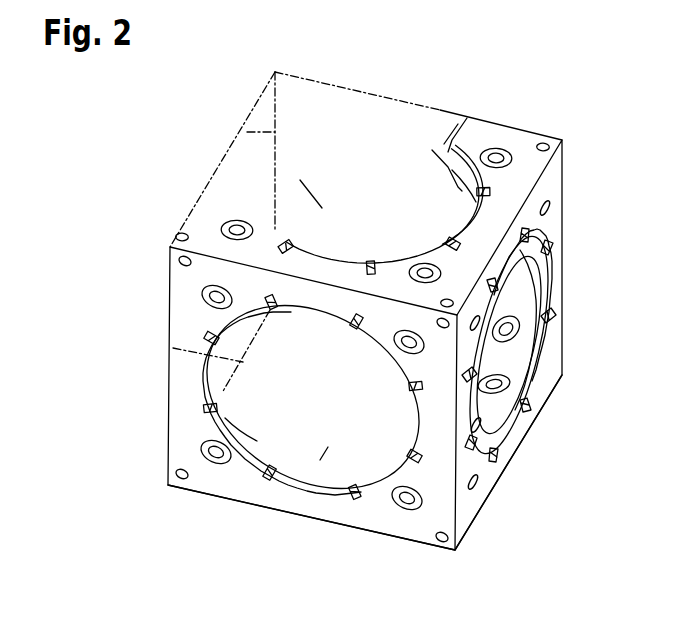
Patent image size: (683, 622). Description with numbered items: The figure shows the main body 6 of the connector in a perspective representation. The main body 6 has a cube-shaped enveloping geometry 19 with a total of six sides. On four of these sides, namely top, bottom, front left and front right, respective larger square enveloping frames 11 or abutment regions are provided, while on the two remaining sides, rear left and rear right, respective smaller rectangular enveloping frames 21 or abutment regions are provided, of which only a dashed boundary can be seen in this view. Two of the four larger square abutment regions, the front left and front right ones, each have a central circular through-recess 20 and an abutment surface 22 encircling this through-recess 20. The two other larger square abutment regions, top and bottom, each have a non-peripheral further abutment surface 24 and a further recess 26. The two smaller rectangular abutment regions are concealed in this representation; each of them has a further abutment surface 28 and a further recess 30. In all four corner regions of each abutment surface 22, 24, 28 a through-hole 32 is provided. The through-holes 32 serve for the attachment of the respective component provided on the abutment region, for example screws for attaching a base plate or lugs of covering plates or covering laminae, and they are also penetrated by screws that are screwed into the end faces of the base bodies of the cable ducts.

The main body 6 is at (122, 323).
The larger square enveloping frame 11 is at (232, 133).
The cube-shaped enveloping geometry 19 is at (247, 132).
The central circular through-recess 20 is at (250, 372).
The smaller rectangular enveloping frame 21 is at (430, 150).
The abutment surface 22 is at (377, 520).
The further abutment surface 24 is at (245, 450).
The further recess 26 is at (300, 180).
The further abutment surface 28 is at (513, 302).
The further recess 30 is at (457, 187).
The through-hole 32 is at (233, 220).